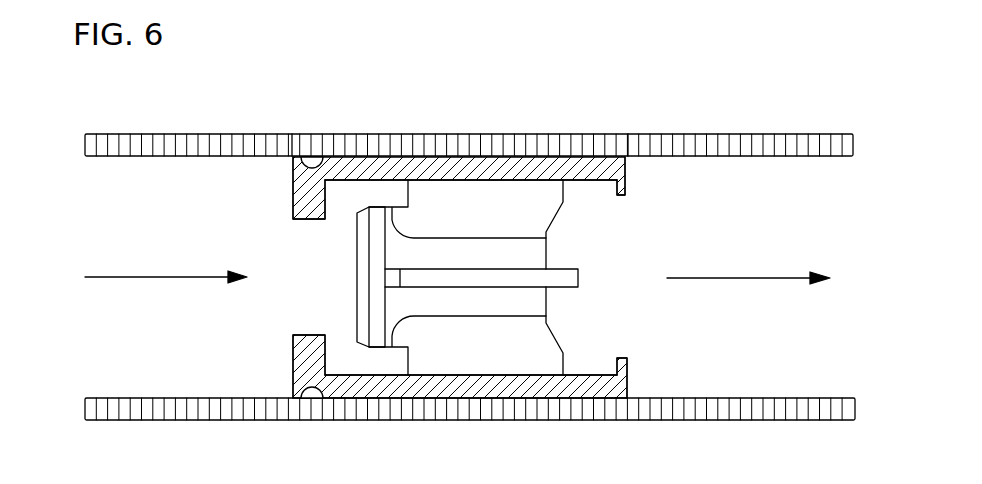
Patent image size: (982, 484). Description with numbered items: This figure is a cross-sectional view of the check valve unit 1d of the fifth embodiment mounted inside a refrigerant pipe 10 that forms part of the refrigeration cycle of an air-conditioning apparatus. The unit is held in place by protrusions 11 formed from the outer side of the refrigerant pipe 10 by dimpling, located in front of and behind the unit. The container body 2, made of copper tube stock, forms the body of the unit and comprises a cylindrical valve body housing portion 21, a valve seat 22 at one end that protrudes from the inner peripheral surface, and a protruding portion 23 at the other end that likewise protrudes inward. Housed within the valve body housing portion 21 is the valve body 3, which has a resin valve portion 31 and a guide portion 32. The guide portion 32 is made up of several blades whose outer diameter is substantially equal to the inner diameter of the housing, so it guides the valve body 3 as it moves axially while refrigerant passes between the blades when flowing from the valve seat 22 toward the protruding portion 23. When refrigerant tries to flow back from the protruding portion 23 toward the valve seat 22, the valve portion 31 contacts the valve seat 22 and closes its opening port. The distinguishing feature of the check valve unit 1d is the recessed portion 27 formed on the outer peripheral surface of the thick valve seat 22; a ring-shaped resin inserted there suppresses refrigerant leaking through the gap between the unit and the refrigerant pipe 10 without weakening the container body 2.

The check valve unit 1d is at (667, 198).
The refrigerant pipe 10 is at (170, 143).
The protrusions 11 is at (292, 137).
The container body 2 is at (524, 166).
The valve body housing portion 21 is at (460, 165).
The valve seat 22 is at (327, 207).
The protruding portion 23 is at (628, 192).
The recessed portion 27 is at (313, 157).
The valve body 3 is at (475, 298).
The valve portion 31 is at (360, 293).
The guide portion 32 is at (513, 363).